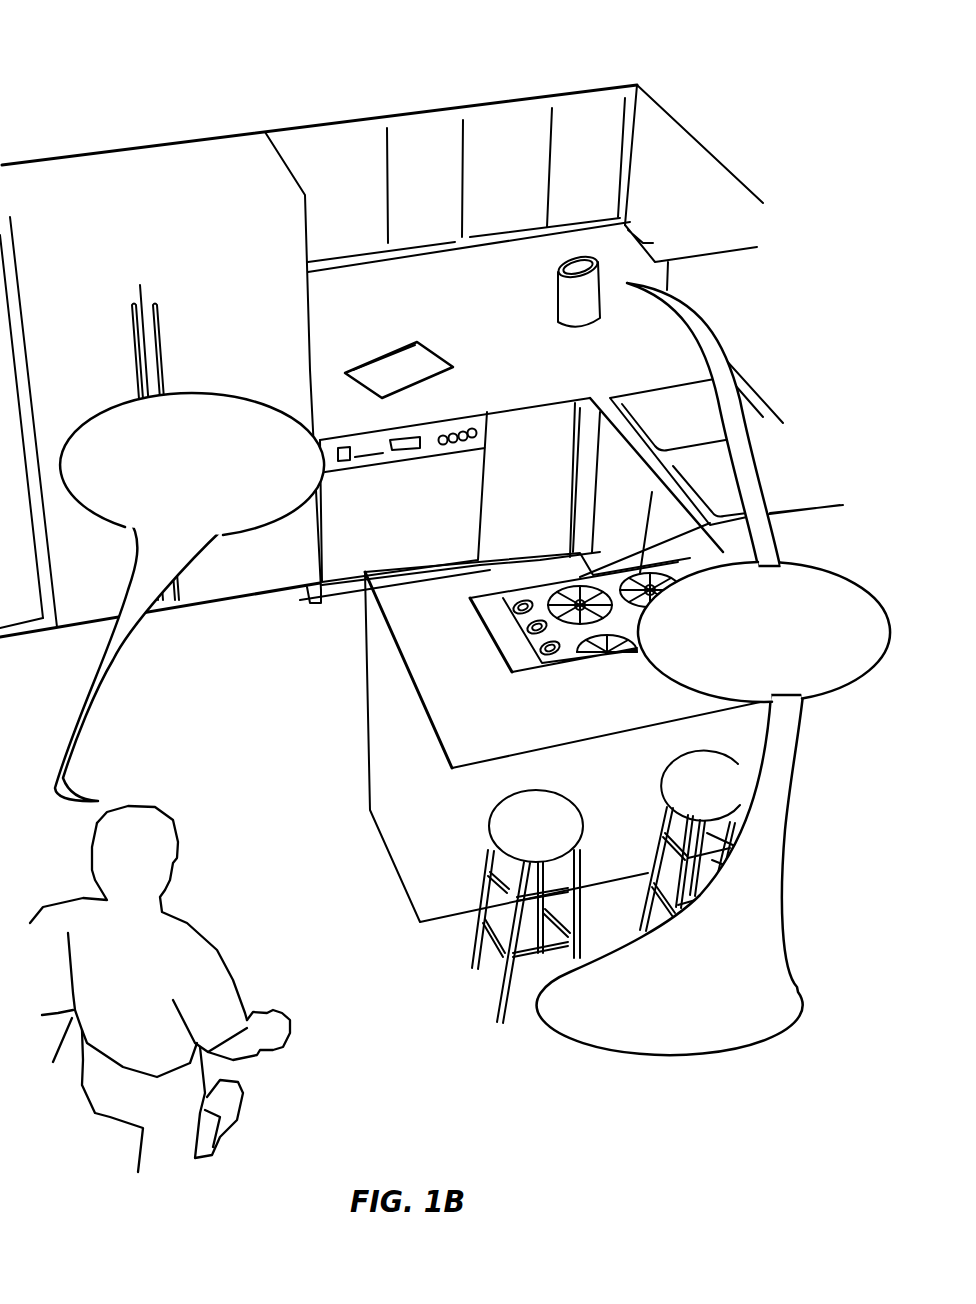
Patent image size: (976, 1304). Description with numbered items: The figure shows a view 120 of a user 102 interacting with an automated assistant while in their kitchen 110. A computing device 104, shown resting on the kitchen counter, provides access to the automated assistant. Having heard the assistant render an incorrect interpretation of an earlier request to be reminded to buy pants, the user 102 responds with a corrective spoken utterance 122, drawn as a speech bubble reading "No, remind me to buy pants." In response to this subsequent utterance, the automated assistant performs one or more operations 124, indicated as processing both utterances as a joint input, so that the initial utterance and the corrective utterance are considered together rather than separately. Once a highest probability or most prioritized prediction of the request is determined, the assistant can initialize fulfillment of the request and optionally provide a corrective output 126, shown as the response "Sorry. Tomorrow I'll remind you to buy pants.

The user 102 is at (160, 989).
The computing device 104 is at (598, 327).
The kitchen 110 is at (570, 830).
The view 120 is at (92, 60).
The corrective spoken utterance 122 is at (87, 420).
The operations 124 is at (820, 697).
The corrective output 126 is at (695, 1060).